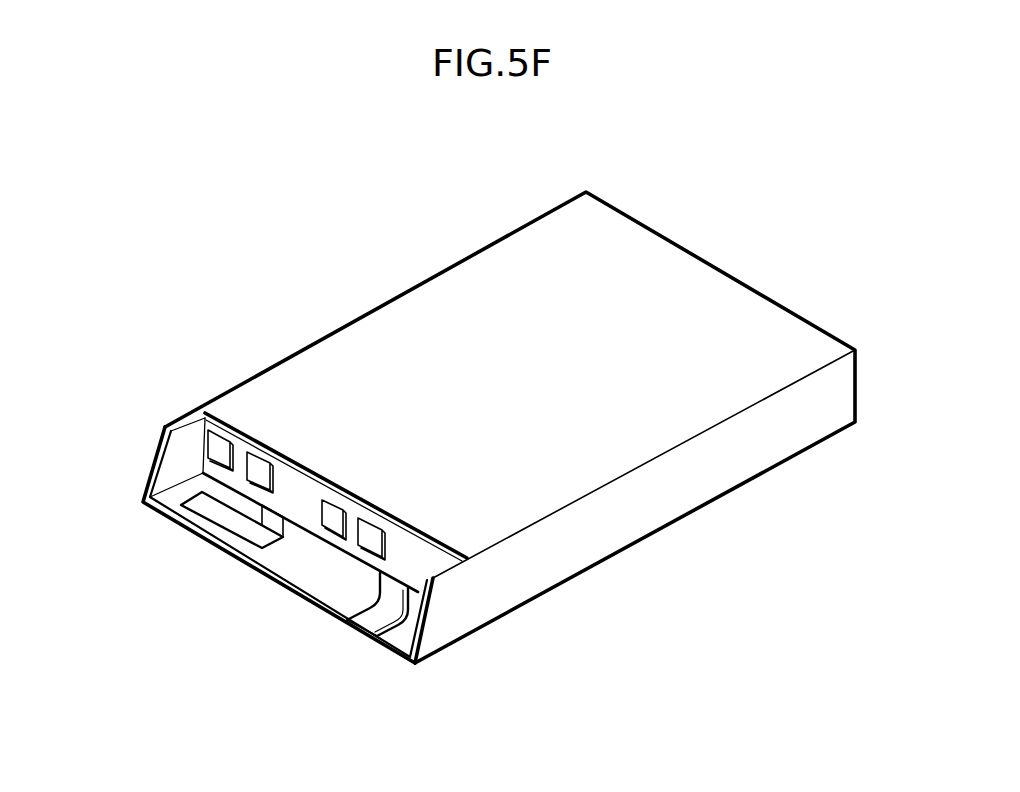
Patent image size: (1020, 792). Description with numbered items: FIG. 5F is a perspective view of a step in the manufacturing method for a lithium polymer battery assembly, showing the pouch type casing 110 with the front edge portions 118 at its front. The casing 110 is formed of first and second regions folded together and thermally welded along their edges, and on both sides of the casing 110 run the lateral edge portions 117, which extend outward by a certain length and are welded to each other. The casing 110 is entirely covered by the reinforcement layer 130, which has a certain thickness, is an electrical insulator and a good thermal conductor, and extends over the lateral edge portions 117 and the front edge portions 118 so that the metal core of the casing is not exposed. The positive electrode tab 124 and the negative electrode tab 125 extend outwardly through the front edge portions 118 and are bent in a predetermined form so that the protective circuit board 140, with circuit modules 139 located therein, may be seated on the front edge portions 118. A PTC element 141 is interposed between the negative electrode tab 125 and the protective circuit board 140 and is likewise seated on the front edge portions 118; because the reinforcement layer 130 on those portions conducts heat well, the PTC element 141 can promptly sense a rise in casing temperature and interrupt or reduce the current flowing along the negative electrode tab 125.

The pouch type casing 110 is at (539, 262).
The lateral edge portions 117 is at (350, 297).
The reinforcement layer 130 is at (738, 300).
The negative electrode tab 125 is at (180, 518).
The front edge portions 118 is at (231, 509).
The circuit modules 139 is at (218, 448).
The protective circuit board 140 is at (202, 430).
The PTC element 141 is at (253, 532).
The positive electrode tab 124 is at (365, 617).